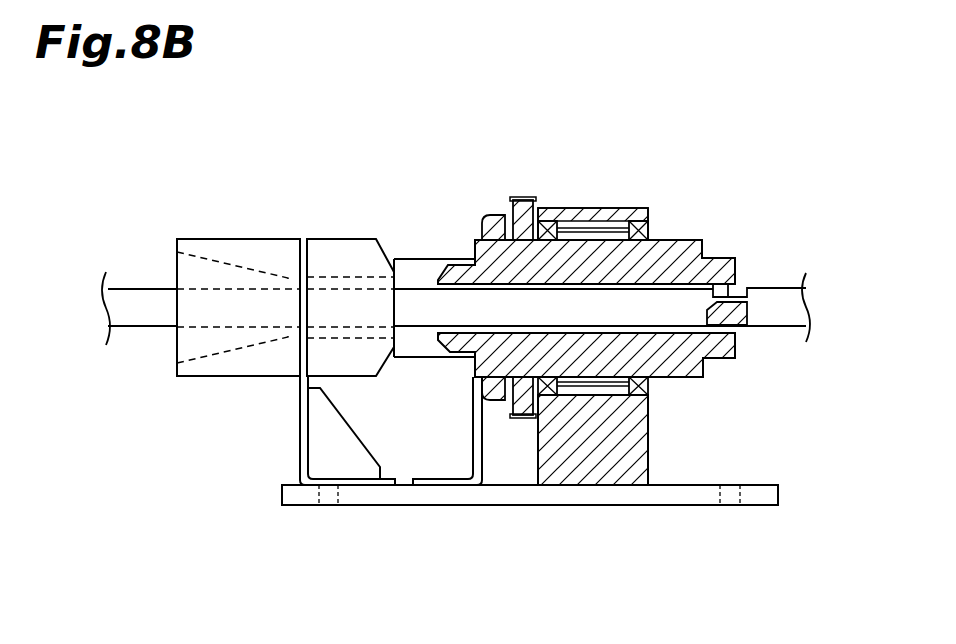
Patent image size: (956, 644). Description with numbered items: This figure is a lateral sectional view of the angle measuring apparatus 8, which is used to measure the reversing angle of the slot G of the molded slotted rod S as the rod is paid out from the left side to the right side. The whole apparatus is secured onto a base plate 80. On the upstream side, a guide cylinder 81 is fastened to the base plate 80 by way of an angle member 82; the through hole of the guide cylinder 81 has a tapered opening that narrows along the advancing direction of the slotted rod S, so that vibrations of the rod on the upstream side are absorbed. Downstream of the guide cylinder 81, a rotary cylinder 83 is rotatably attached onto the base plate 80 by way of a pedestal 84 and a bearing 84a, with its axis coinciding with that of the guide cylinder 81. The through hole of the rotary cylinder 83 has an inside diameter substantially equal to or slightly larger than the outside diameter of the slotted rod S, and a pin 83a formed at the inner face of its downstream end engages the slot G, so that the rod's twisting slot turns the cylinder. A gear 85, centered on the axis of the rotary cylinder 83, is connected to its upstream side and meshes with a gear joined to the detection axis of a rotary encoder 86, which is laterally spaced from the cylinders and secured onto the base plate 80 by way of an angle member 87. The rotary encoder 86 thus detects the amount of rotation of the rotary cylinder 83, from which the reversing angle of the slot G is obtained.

The angle measuring apparatus 8 is at (673, 147).
The slotted rod S is at (137, 324).
The slot G is at (744, 301).
The base plate 80 is at (481, 505).
The guide cylinder 81 is at (201, 378).
The angle member 82 is at (317, 432).
The rotary cylinder 83 is at (702, 240).
The pin 83a is at (724, 286).
The pedestal 84 is at (650, 457).
The bearing 84a is at (635, 208).
The gear 85 is at (511, 212).
The rotary encoder 86 is at (407, 262).
The angle member 87 is at (473, 432).